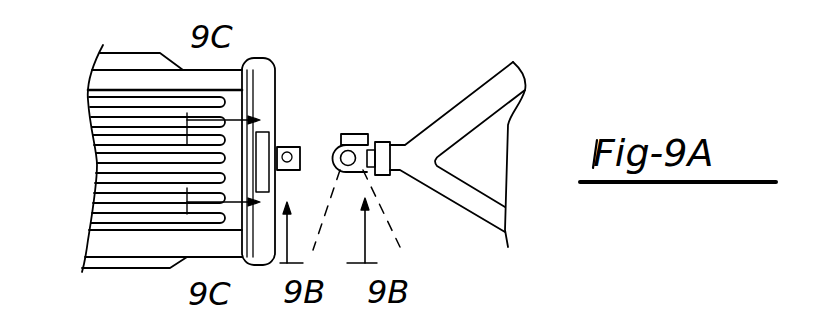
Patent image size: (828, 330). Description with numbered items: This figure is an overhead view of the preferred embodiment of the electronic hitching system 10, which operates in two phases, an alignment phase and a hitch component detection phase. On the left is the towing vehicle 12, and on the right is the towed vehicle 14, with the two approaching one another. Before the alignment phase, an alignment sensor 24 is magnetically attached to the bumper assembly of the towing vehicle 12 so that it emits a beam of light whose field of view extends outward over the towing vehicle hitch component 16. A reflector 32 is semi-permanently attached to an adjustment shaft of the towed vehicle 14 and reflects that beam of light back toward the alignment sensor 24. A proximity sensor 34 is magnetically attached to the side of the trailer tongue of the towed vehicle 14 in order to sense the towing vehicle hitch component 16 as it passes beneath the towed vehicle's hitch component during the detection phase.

The electronic hitching system 10 is at (370, 62).
The towing vehicle 12 is at (94, 156).
The towed vehicle 14 is at (467, 212).
The towing vehicle hitch component 16 is at (288, 151).
The alignment sensor 24 is at (264, 130).
The reflector 32 is at (384, 141).
The proximity sensor 34 is at (350, 134).